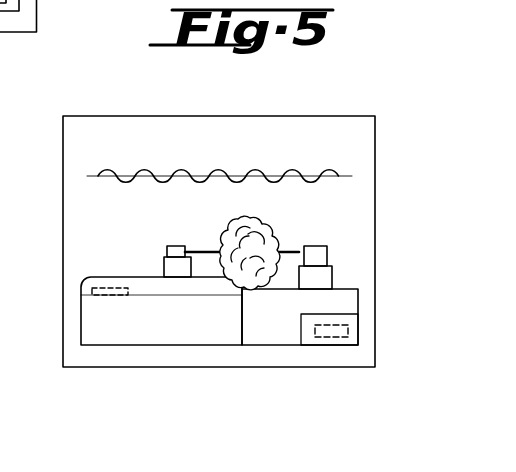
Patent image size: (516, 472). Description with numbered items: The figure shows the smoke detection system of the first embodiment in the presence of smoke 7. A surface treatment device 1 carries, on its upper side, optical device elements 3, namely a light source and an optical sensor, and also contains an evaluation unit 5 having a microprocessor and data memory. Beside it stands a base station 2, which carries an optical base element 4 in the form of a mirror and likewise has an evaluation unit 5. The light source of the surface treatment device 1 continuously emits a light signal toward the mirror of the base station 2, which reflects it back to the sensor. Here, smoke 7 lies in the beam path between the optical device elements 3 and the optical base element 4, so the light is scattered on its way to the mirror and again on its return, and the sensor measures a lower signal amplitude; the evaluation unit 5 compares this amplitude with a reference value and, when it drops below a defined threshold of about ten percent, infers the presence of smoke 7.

The surface treatment device 1 is at (139, 324).
The base station 2 is at (345, 290).
The optical device element 3 is at (177, 271).
The optical base element 4 is at (316, 262).
The evaluation unit 5 is at (95, 290).
The smoke 7 is at (265, 229).